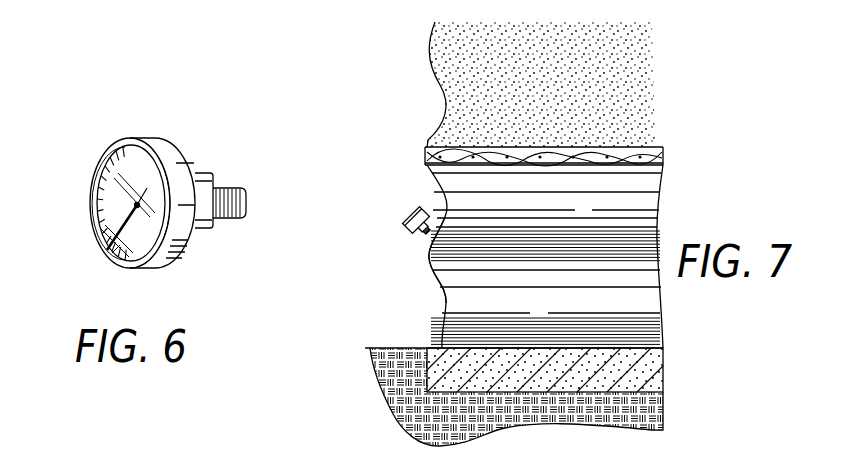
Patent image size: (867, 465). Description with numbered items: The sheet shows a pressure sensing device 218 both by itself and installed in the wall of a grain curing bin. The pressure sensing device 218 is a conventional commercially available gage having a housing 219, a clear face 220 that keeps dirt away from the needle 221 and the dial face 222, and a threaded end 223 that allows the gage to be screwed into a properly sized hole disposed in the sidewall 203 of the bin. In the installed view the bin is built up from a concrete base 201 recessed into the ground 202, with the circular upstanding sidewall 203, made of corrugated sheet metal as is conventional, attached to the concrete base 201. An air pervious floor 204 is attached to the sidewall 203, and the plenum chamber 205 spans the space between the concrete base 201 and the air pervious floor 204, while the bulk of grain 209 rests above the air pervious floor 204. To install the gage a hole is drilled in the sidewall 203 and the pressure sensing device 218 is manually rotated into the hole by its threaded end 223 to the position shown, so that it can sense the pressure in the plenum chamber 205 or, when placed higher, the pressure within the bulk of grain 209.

In FIG. 6, the pressure sensing device 218 is at (198, 130).
In FIG. 7, the pressure sensing device 218 is at (410, 204).
In FIG. 6, the housing 219 is at (182, 233).
In FIG. 6, the clear face 220 is at (112, 253).
In FIG. 6, the needle 221 is at (110, 214).
In FIG. 6, the dial face 222 is at (102, 175).
In FIG. 6, the threaded end 223 is at (228, 187).
In FIG. 7, the concrete base 201 is at (660, 372).
In FIG. 7, the ground 202 is at (400, 348).
In FIG. 7, the sidewall 203 is at (429, 276).
In FIG. 7, the air pervious floor 204 is at (636, 153).
In FIG. 7, the plenum chamber 205 is at (599, 247).
In FIG. 7, the bulk of grain 209 is at (530, 72).